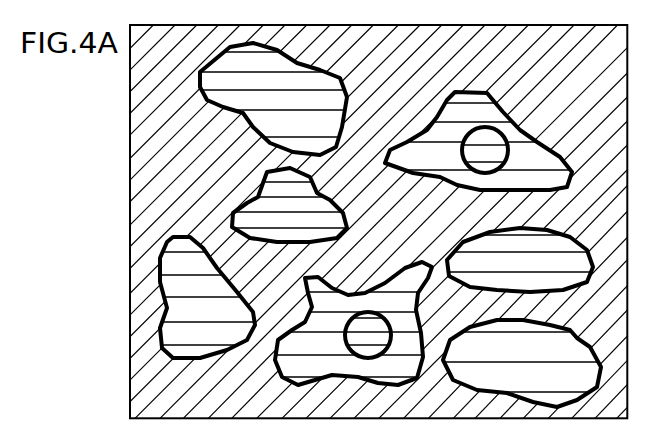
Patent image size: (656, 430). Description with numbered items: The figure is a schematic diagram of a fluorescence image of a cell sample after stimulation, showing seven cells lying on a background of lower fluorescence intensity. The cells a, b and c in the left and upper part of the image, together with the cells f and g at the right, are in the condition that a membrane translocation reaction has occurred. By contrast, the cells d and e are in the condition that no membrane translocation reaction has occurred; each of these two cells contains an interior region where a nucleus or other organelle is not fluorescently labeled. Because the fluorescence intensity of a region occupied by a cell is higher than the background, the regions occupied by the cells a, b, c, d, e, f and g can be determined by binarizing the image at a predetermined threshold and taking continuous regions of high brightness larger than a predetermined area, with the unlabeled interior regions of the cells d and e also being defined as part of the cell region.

The cell a is at (272, 99).
The cell b is at (287, 204).
The cell c is at (207, 313).
The cell d is at (480, 134).
The cell e is at (355, 335).
The cell f is at (523, 253).
The cell g is at (523, 354).